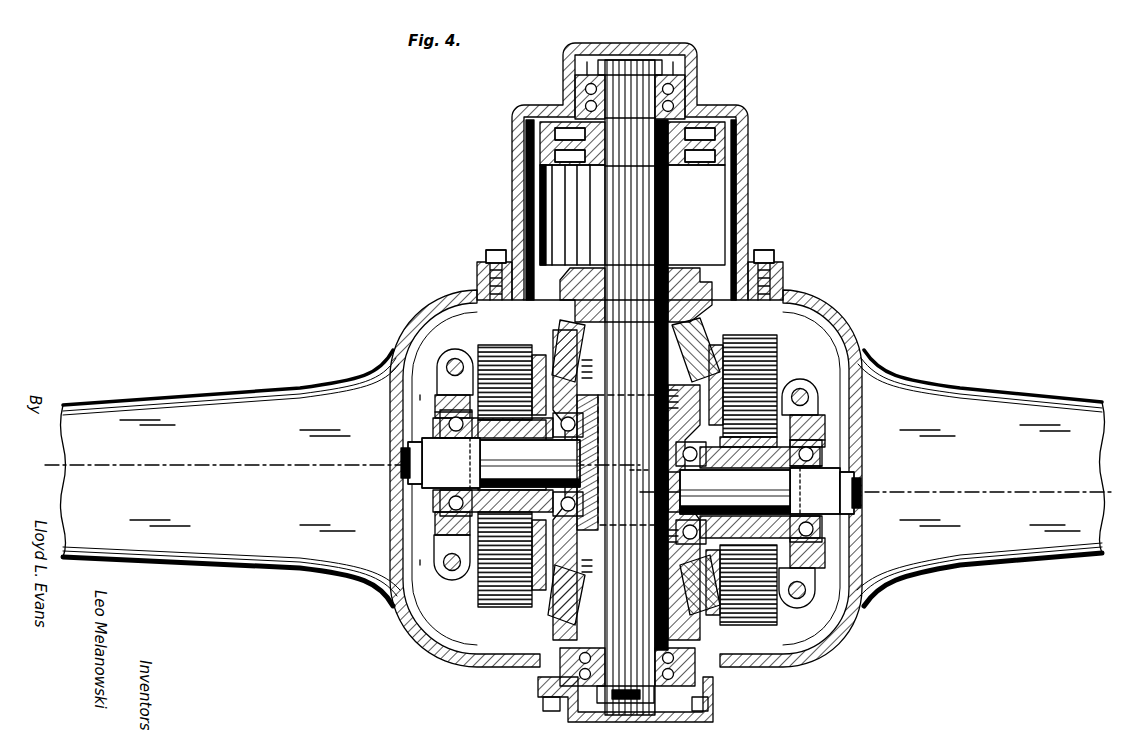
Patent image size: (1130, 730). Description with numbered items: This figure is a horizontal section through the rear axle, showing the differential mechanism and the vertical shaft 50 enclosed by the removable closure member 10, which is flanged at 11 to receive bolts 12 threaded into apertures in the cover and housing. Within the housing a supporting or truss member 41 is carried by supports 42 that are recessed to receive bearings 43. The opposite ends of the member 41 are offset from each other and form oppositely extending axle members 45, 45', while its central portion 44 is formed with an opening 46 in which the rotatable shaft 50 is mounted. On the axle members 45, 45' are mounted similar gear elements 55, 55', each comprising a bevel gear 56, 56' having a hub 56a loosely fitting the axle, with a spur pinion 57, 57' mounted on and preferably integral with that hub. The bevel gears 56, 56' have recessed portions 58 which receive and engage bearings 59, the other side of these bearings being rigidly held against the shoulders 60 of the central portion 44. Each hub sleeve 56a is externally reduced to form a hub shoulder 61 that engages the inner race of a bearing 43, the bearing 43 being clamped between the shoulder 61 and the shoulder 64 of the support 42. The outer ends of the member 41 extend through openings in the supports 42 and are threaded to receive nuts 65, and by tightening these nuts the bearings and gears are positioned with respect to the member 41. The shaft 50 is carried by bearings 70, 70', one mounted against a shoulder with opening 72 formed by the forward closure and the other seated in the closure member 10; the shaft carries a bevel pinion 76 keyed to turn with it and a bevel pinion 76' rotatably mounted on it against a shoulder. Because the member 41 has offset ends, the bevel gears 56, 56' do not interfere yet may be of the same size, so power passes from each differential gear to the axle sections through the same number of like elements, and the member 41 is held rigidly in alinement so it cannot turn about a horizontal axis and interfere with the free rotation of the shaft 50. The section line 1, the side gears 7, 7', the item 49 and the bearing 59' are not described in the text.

The section line / axle centerline 1 is at (45, 465).
The side gear (right) 7 is at (743, 374).
The side gear (left) 7' is at (512, 370).
The closure member 10 is at (512, 125).
The flange 11 is at (480, 270).
The bolts 12 is at (496, 250).
The supporting member 41 is at (631, 476).
The supports 42 is at (404, 528).
The bearings 43 is at (440, 403).
The central portion 44 is at (696, 487).
The axle member 45 is at (735, 492).
The axle member 45' is at (530, 463).
The opening 46 is at (685, 492).
The bearing housing (right) 49 is at (816, 428).
The shaft 50 is at (633, 387).
The gear element 55 is at (741, 593).
The gear element 55' is at (512, 529).
The bevel gear 56 is at (630, 451).
The bevel gear 56' is at (604, 568).
The hub 56a is at (436, 525).
The spur pinion 57 is at (748, 442).
The spur pinion 57' is at (512, 559).
The recessed portions 58 is at (583, 392).
The bearings 59 is at (598, 460).
The lower spacer sleeve 59' is at (625, 583).
The shoulders 60 is at (638, 482).
The hub shoulder 61 is at (432, 418).
The shoulder 64 is at (432, 405).
The nuts 65 is at (410, 452).
The bearing 70 is at (601, 89).
The bearing 70' is at (607, 662).
The opening 72 is at (540, 686).
The bevel pinion 76 is at (629, 590).
The bevel pinion 76' is at (636, 350).